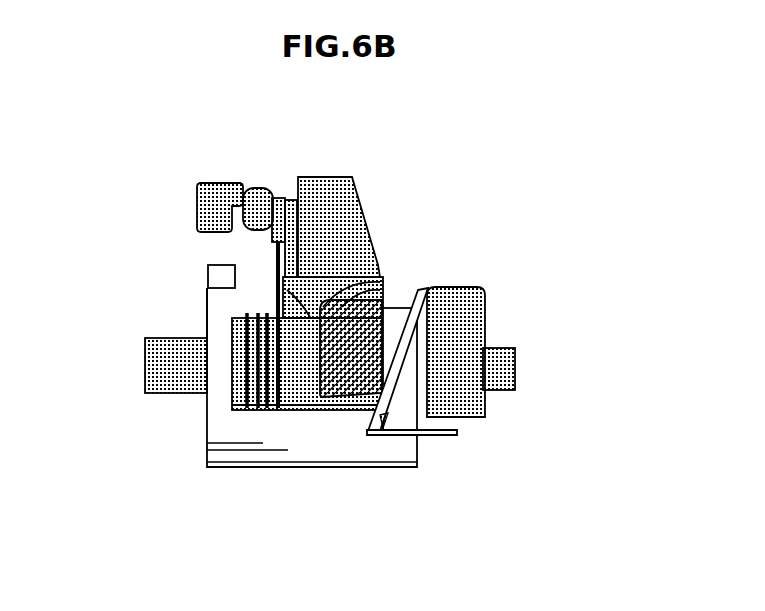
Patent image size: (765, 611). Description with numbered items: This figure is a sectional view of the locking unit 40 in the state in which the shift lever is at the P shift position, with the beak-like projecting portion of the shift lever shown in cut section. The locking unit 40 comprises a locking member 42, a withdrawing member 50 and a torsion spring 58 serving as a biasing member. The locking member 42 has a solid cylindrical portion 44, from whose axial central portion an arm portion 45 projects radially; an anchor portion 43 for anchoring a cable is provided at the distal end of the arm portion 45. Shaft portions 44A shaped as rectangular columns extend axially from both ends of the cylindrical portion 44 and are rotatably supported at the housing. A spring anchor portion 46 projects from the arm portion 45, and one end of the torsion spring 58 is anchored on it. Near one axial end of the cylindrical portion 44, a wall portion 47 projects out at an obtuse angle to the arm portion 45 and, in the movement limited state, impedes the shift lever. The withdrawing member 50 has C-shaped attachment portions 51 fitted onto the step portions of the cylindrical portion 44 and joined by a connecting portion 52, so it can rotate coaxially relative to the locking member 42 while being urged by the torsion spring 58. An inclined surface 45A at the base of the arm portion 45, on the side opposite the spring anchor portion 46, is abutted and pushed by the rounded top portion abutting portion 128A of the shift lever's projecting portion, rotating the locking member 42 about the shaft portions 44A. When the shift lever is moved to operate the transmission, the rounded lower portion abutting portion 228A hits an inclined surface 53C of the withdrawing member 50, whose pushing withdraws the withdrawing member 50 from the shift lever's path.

The locking unit 40 is at (167, 150).
The locking member 42 is at (363, 162).
The anchor portion 43 is at (223, 186).
The cylindrical portion 44 is at (311, 390).
The shaft portions 44A is at (172, 338).
The arm portion 45 is at (327, 202).
The inclined surface 45A is at (381, 262).
The spring anchor portion 46 is at (280, 192).
The wall portion 47 is at (418, 290).
The withdrawing member 50 is at (245, 470).
The attachment portions 51 is at (222, 278).
The connecting portion 52 is at (295, 447).
The inclined surface 53C is at (393, 436).
The torsion spring 58 is at (271, 277).
The top portion abutting portion 128A is at (209, 292).
The lower portion abutting portion 228A is at (397, 388).